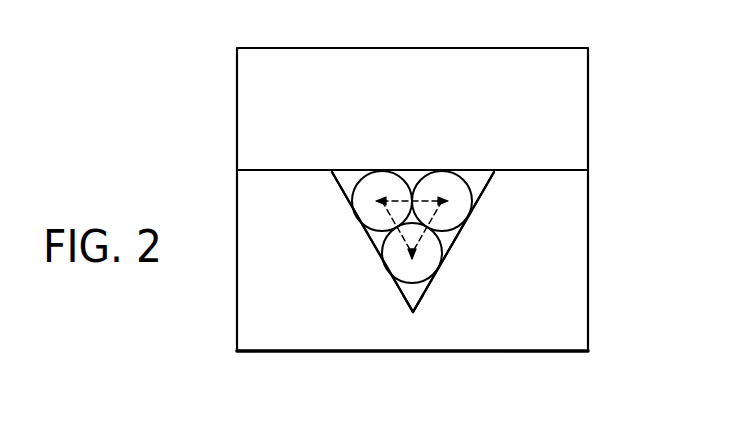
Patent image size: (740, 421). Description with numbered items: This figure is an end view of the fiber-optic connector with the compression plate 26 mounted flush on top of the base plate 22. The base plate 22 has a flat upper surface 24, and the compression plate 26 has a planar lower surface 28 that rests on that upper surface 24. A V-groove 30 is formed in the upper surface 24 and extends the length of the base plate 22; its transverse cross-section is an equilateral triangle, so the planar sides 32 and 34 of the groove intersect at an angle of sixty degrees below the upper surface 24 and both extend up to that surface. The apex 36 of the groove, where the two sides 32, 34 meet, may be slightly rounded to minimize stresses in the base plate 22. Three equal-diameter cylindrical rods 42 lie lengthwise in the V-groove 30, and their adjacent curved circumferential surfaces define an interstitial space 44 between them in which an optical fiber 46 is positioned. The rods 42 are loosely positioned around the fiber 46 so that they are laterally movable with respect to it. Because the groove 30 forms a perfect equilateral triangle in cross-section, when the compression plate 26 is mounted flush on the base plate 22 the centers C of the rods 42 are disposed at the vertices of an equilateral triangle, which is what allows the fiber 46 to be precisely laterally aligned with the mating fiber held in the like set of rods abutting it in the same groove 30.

The base plate 22 is at (577, 268).
The upper surface 24 is at (552, 168).
The compression plate 26 is at (575, 77).
The lower surface 28 is at (253, 171).
The V-groove 30 is at (377, 251).
The planar side 32 is at (348, 176).
The planar side 34 is at (480, 180).
The apex 36 is at (415, 313).
The cylindrical rods 42 is at (425, 182).
The interstitial space 44 is at (395, 215).
The optical fiber 46 is at (430, 218).
The centers of the rods C is at (378, 201).